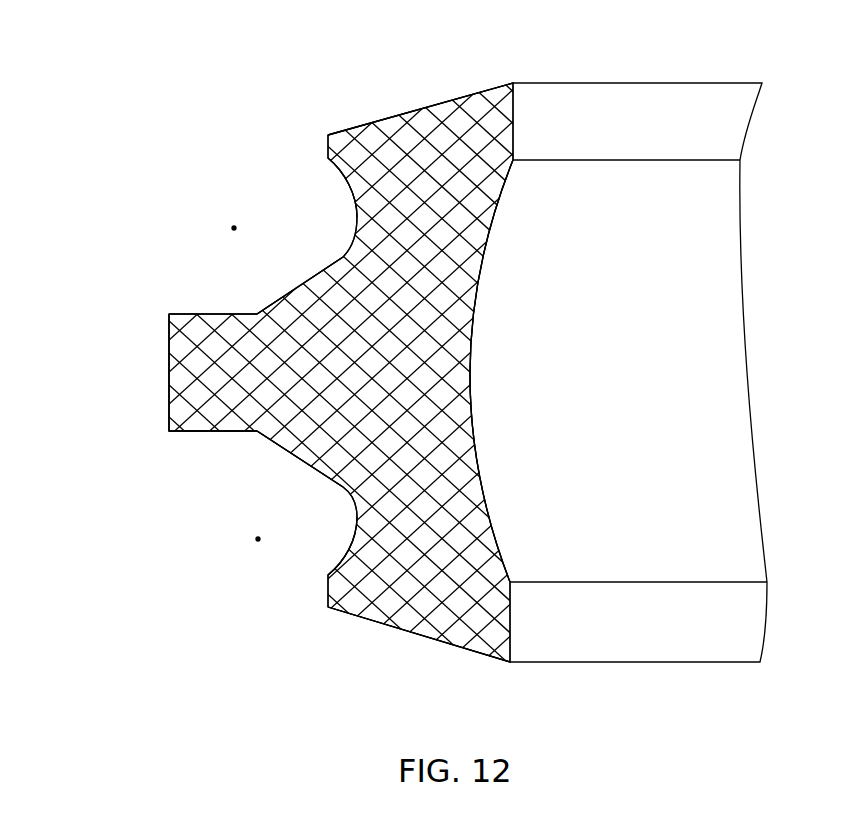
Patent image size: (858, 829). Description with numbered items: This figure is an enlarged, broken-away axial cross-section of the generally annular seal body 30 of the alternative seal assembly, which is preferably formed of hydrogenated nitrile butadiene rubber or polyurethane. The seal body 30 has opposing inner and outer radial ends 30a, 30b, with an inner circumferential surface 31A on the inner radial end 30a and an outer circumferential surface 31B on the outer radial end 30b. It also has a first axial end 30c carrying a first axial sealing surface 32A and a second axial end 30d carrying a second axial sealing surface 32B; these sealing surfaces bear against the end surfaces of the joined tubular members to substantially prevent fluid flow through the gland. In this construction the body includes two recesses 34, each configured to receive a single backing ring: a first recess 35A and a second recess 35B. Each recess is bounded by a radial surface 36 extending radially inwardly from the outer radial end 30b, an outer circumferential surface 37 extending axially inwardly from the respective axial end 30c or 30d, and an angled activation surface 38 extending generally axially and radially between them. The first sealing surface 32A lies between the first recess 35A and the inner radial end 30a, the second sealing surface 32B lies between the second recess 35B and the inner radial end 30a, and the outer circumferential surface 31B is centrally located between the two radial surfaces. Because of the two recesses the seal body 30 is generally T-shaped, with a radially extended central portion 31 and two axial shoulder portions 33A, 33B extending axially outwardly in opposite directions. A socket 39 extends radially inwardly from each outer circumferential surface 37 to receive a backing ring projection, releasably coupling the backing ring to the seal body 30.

The seal body 30 is at (288, 104).
The radially extended central portion 31 is at (422, 372).
The inner circumferential surface 31A is at (537, 432).
The outer circumferential surface 31B is at (169, 405).
The inner radial end 30a is at (465, 377).
The outer radial end 30b is at (175, 373).
The first axial end 30c is at (388, 623).
The second axial end 30d is at (447, 112).
The first axial sealing surface 32A is at (427, 638).
The second axial sealing surface 32B is at (422, 109).
The first axial shoulder portion 33A is at (447, 560).
The second axial shoulder portion 33B is at (447, 220).
The recess 34 is at (213, 203).
The first recess 35A is at (258, 539).
The second recess 35B is at (234, 228).
The radial surface 36 is at (225, 313).
The outer circumferential surface of the recess 37 is at (328, 158).
The angled activation surface 38 is at (310, 278).
The socket 39 is at (357, 218).